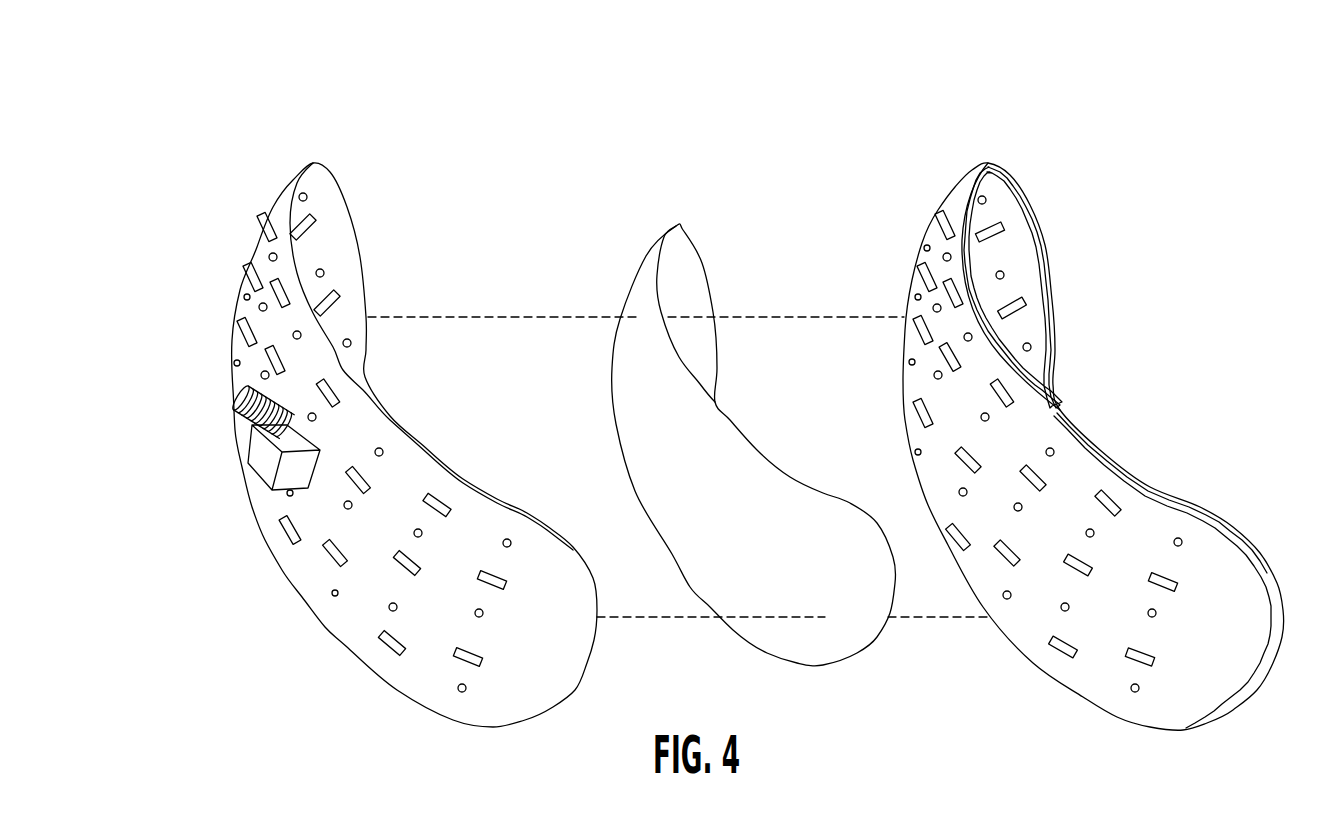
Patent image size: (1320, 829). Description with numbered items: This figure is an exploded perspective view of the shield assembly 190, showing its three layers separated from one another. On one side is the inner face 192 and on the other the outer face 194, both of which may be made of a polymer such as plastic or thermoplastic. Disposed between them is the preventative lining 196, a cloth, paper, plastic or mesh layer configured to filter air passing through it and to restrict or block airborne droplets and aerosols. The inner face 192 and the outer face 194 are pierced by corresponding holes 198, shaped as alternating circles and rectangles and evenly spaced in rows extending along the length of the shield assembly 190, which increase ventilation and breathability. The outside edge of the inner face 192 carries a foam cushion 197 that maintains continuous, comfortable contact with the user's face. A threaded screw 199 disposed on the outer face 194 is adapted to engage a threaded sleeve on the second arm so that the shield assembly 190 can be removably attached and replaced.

The shield assembly 190 is at (417, 72).
The inner face 192 is at (957, 197).
The outer face 194 is at (264, 296).
The preventative lining 196 is at (638, 300).
The foam cushion 197 is at (1040, 234).
The holes 198 is at (1179, 537).
The threaded screw 199 is at (246, 394).